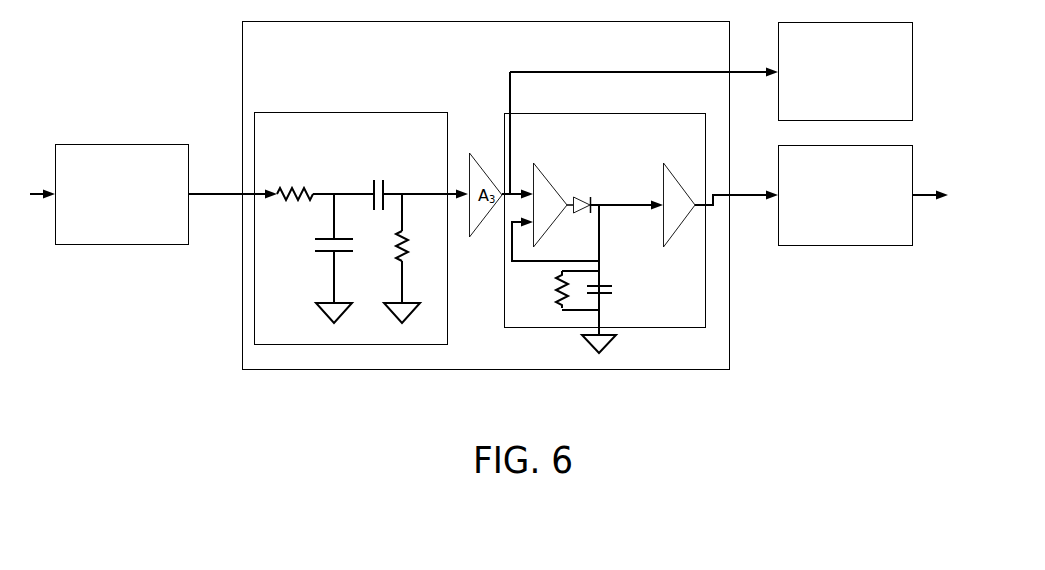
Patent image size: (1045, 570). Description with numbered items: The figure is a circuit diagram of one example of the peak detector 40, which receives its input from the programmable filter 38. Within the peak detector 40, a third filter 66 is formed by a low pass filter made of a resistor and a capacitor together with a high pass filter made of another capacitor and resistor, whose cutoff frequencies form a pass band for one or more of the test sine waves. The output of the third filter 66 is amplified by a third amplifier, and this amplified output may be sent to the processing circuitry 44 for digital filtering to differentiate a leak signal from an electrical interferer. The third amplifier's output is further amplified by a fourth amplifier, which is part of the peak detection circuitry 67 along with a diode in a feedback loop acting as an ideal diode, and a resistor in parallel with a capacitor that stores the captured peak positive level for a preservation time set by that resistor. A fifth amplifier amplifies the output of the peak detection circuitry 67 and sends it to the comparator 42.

The programmable filter 38 is at (154, 216).
The peak detector 40 is at (385, 50).
The third filter 66 is at (343, 140).
The peak detection circuitry 67 is at (687, 134).
The processing circuitry 44 is at (893, 94).
The comparator 42 is at (905, 206).